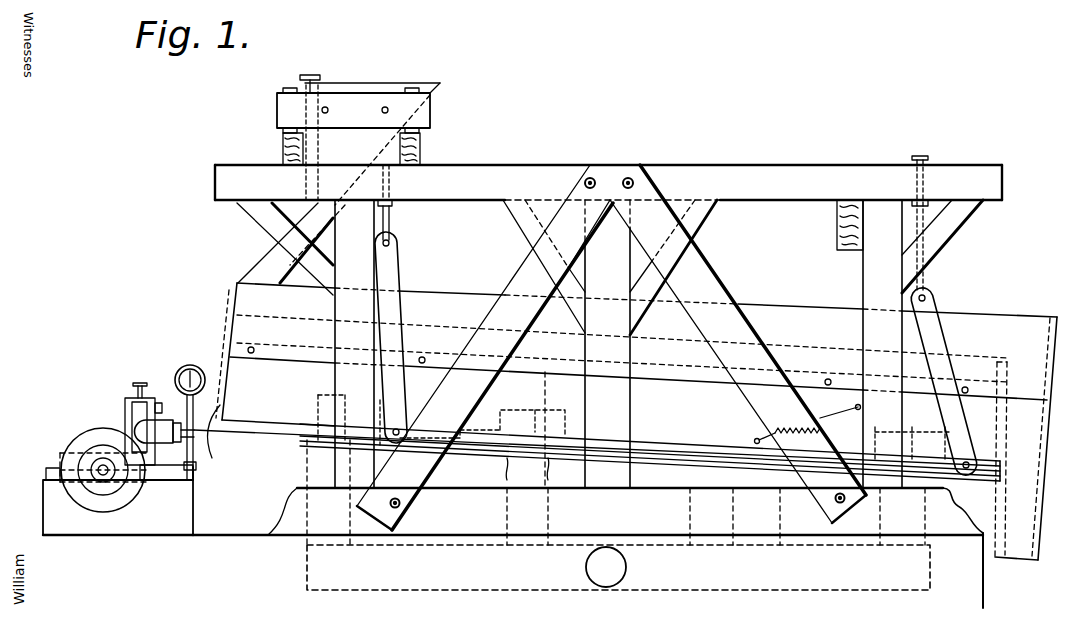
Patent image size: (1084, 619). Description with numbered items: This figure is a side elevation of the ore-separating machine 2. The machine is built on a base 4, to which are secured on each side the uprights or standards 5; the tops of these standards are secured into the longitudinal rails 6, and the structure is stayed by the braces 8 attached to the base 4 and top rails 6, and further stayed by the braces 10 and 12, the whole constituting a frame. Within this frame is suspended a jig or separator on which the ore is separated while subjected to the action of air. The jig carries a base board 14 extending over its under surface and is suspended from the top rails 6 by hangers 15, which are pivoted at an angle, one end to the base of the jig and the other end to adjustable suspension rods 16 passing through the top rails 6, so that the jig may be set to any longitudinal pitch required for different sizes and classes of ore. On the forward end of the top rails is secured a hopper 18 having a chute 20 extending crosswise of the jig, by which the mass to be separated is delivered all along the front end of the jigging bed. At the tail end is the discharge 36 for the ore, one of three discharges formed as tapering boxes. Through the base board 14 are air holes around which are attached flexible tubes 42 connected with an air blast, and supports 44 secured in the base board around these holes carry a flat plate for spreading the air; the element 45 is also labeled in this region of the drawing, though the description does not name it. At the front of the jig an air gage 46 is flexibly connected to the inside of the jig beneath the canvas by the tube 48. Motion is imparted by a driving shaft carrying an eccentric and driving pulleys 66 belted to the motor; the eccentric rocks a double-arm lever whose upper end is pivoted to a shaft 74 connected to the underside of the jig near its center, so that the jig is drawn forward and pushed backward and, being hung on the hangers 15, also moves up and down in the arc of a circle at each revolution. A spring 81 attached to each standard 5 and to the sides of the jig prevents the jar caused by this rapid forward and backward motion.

The machine 2 is at (608, 152).
The base 4 is at (513, 537).
The uprights or standards 5 is at (618, 344).
The longitudinal rails 6 is at (661, 181).
The braces 8 is at (611, 347).
The braces 10 is at (610, 246).
The braces 12 is at (612, 267).
The base board 14 is at (950, 477).
The hangers 15 is at (390, 339).
The adjustable suspension rods 16 is at (924, 280).
The hopper 18 is at (350, 92).
The chute 20 is at (270, 250).
The ore discharge 36 is at (1026, 438).
The flexible tubes 42 is at (597, 456).
The supports 44 is at (557, 432).
The clamp 45 is at (502, 407).
The air gage 46 is at (195, 363).
The tube 48 is at (210, 445).
The driving pulleys 66 is at (113, 505).
The shaft 74 is at (270, 443).
The spring 81 is at (811, 430).